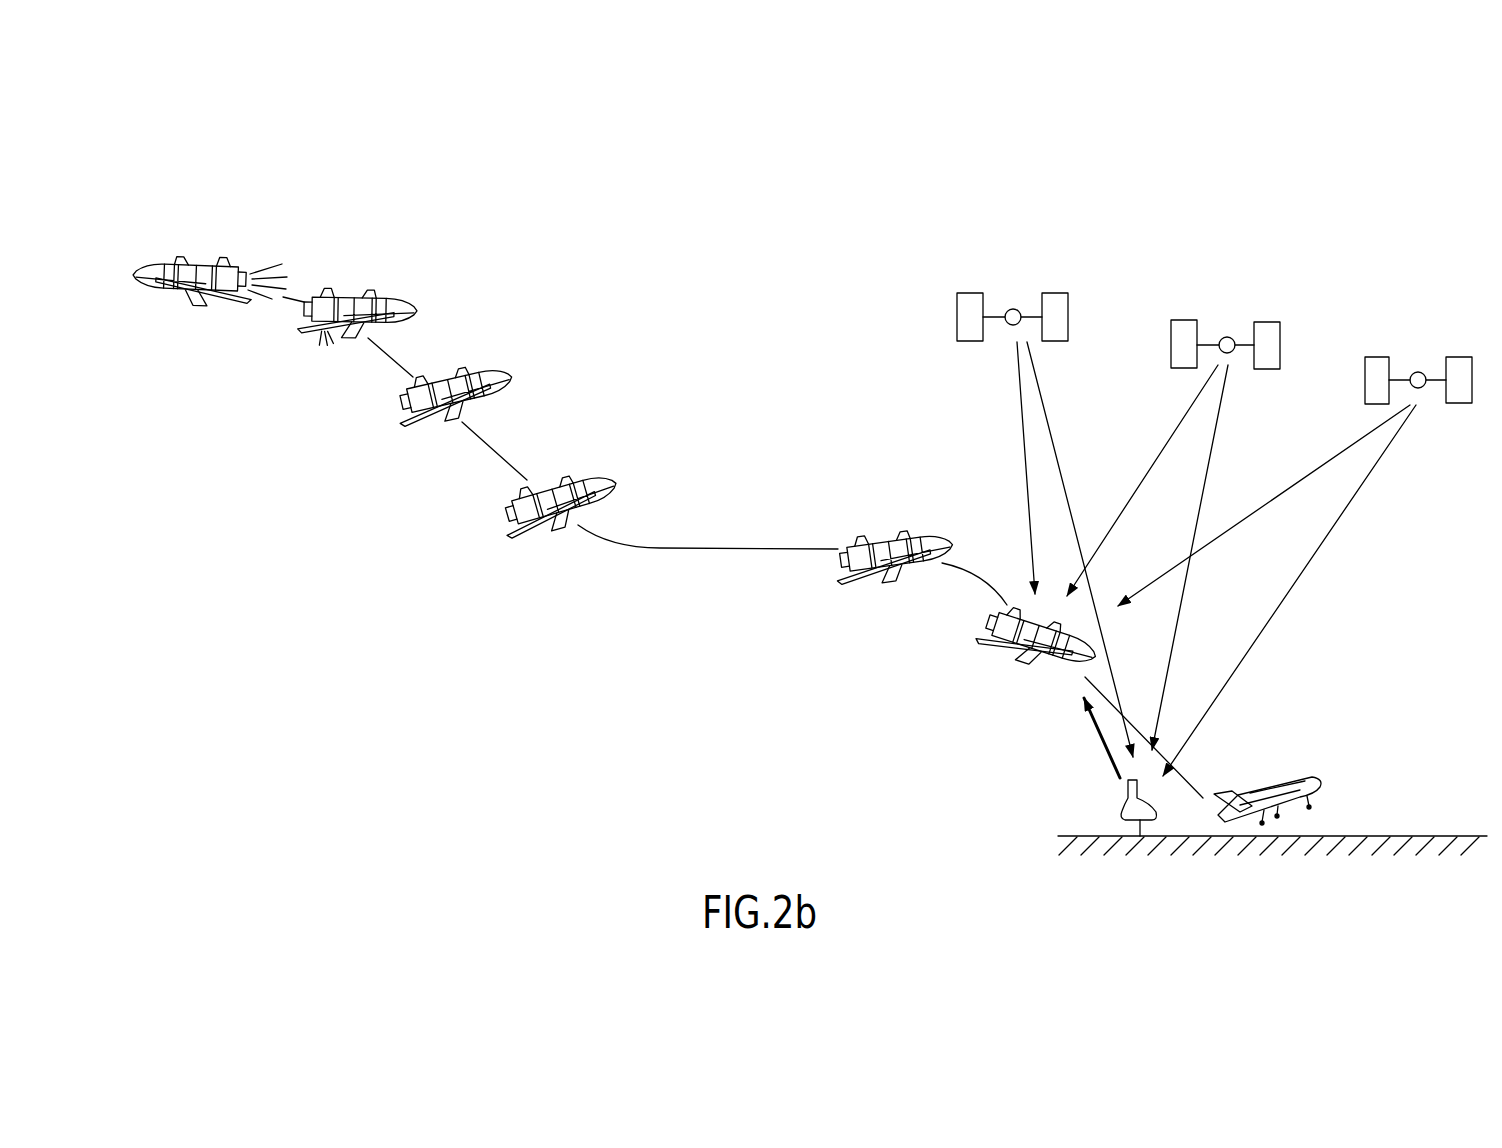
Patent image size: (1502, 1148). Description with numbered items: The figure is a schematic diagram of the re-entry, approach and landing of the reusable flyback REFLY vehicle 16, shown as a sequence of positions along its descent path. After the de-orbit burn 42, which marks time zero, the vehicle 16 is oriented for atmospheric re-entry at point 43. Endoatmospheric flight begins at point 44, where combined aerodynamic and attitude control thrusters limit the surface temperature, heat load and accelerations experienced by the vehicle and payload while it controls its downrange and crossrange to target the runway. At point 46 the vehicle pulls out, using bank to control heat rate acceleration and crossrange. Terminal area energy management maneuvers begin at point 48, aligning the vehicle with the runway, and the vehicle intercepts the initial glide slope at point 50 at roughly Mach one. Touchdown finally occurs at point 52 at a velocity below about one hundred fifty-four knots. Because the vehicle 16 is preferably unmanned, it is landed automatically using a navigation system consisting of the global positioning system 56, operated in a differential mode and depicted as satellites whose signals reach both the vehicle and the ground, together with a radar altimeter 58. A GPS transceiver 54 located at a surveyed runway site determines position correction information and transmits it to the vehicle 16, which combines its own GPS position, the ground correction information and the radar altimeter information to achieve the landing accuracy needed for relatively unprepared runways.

The REFLY vehicle 16 is at (168, 317).
The de-orbit burn 42 is at (226, 216).
The re-entry orientation point 43 is at (440, 277).
The endoatmospheric flight start point 44 is at (403, 443).
The pull-out point 46 is at (493, 534).
The terminal area energy management point 48 is at (900, 597).
The initial glide slope intercept point 50 is at (977, 654).
The touchdown point 52 is at (1337, 767).
The GPS transceiver 54 is at (1100, 810).
The global positioning system 56 is at (1250, 295).
The radar altimeter 58 is at (1063, 660).